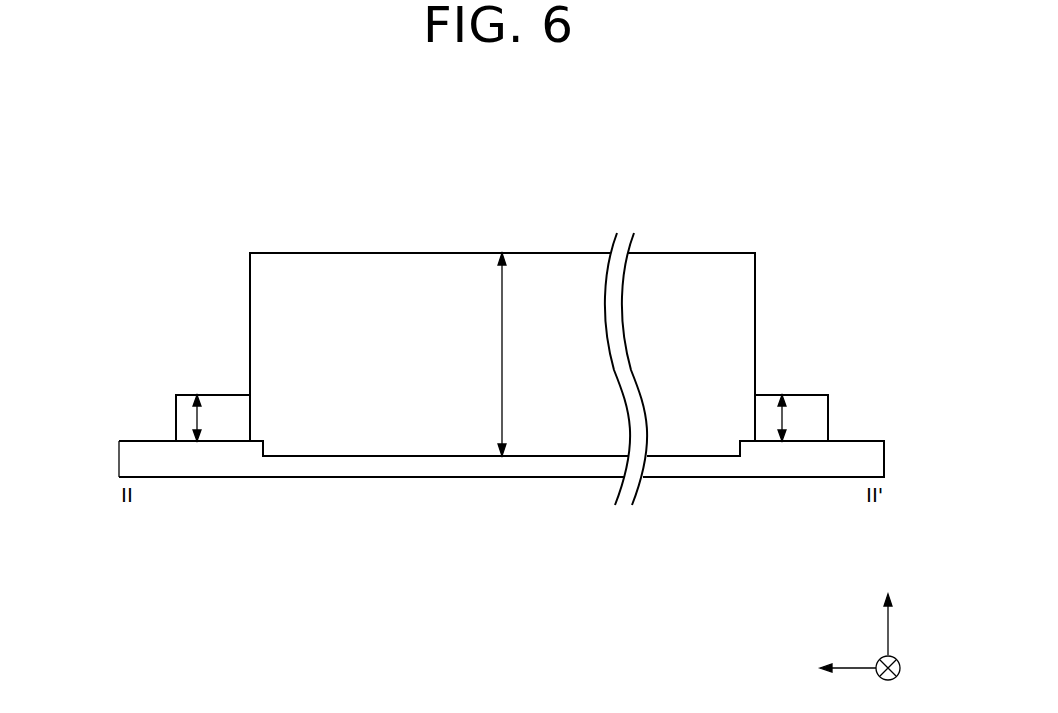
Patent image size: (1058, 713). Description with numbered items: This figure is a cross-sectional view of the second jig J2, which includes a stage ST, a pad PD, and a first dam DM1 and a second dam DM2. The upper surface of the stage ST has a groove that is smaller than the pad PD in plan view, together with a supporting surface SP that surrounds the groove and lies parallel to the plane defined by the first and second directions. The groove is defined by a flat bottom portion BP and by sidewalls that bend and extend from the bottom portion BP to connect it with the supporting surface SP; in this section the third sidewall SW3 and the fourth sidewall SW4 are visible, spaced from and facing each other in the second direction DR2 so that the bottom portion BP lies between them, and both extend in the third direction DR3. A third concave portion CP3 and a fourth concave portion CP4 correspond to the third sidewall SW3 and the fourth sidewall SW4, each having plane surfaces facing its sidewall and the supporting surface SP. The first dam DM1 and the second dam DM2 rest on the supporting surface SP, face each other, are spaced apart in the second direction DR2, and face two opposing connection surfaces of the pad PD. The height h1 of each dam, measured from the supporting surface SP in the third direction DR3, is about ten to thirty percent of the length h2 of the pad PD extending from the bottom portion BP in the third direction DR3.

The pad PD is at (406, 267).
The bottom portion BP is at (413, 457).
The first dam DM1 is at (185, 420).
The second dam DM2 is at (820, 420).
The supporting surface SP is at (140, 441).
The stage ST is at (877, 458).
The third concave portion CP3 is at (253, 441).
The fourth concave portion CP4 is at (750, 441).
The third sidewall SW3 is at (266, 455).
The fourth sidewall SW4 is at (738, 455).
The height of the dams h1 is at (504, 418).
The length of the pad h2 is at (517, 354).
The second jig J2 is at (804, 137).
The second direction DR2 is at (829, 669).
The third direction DR3 is at (893, 624).